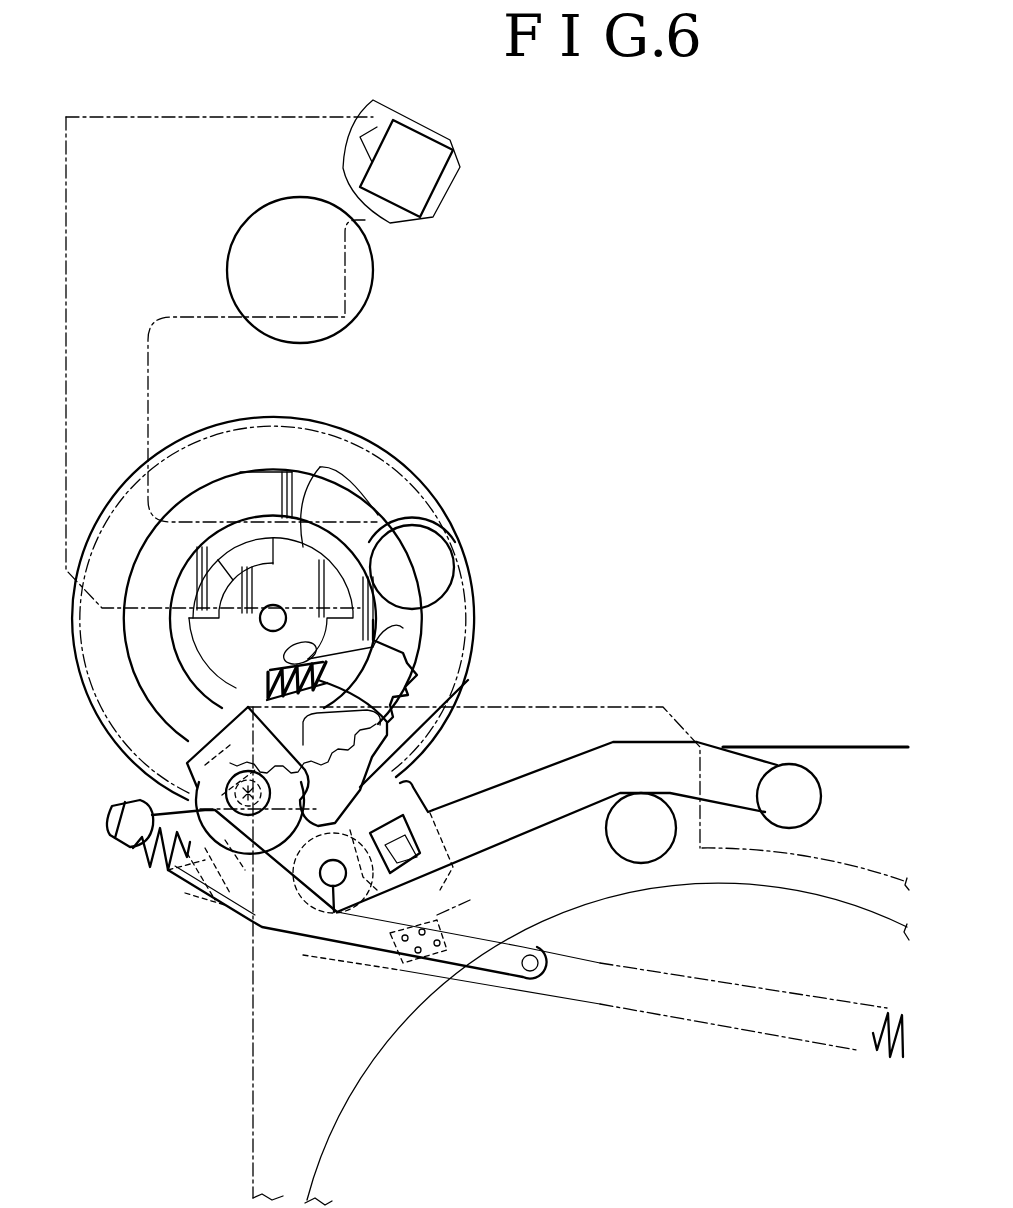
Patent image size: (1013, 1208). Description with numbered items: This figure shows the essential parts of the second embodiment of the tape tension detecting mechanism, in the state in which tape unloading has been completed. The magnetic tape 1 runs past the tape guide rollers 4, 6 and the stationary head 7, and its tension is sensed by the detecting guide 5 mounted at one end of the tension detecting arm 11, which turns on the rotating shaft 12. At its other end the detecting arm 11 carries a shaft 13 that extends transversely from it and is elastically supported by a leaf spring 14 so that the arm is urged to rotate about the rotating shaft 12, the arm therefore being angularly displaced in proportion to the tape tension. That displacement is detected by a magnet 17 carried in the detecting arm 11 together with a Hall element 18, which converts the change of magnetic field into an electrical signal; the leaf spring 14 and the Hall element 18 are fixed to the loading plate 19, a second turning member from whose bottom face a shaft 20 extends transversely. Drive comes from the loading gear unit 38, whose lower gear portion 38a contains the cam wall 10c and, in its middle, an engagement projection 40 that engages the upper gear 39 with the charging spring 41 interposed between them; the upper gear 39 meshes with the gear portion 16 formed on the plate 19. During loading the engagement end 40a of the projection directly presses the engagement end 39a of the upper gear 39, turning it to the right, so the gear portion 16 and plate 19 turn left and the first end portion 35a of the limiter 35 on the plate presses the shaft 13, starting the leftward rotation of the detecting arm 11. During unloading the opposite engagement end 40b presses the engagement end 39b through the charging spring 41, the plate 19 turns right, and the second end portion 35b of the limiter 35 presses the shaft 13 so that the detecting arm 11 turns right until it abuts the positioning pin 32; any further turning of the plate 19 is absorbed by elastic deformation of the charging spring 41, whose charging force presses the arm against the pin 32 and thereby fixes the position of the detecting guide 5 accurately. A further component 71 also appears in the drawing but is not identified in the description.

The magnetic tape 1 is at (865, 747).
The tape guide roller 4 is at (423, 542).
The tension detecting roller (detecting guide) 5 is at (792, 785).
The tape guide roller 6 is at (357, 278).
The stationary head 7 is at (417, 160).
The cam wall 10c is at (240, 470).
The tension detecting arm 11 is at (638, 777).
The rotating shaft 12 is at (334, 912).
The shaft 13 is at (207, 873).
The leaf spring 14 is at (223, 955).
The gear portion 16 is at (285, 750).
The magnet 17 is at (460, 880).
The Hall element 18 is at (433, 810).
The loading plate 19 is at (480, 930).
The shaft 20 is at (523, 987).
The positioning pin 32 is at (647, 842).
The limiter 35 is at (195, 760).
The first end portion of limiter 35a is at (278, 920).
The second end portion of limiter 35b is at (227, 870).
The loading gear unit 38 is at (463, 590).
The gear portion 38a is at (283, 447).
The upper gear 39 is at (422, 670).
The engagement end of upper gear 39a is at (403, 628).
The engagement end of upper gear 39b is at (407, 692).
The engagement projection 40 is at (353, 520).
The engagement end of engagement projection 40a is at (307, 553).
The engagement end of engagement projection 40b is at (260, 688).
The charging spring 41 is at (330, 630).
The damper knob 71 is at (133, 857).